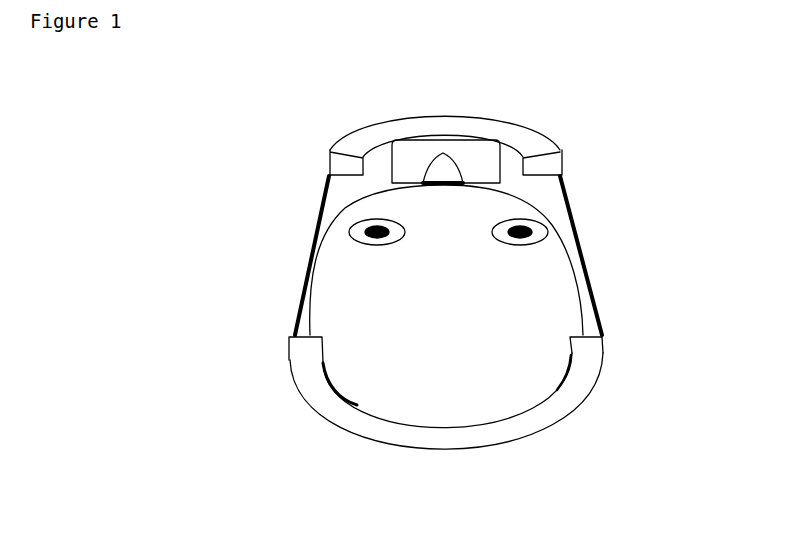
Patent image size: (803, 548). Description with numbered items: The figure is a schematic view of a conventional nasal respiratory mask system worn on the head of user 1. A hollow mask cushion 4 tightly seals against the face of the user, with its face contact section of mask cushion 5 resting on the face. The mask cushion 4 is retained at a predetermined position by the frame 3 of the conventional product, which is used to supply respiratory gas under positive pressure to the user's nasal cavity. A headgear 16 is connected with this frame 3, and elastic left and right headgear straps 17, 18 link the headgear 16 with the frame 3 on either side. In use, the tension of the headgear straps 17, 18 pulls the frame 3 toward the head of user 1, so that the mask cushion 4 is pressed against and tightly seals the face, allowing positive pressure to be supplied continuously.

The head of user 1 is at (323, 262).
The frame 3 is at (560, 150).
The mask cushion 4 is at (393, 163).
The face contact section of mask cushion 5 is at (480, 185).
The headgear 16 is at (302, 370).
The left headgear strap 17 is at (297, 310).
The right headgear strap 18 is at (600, 310).